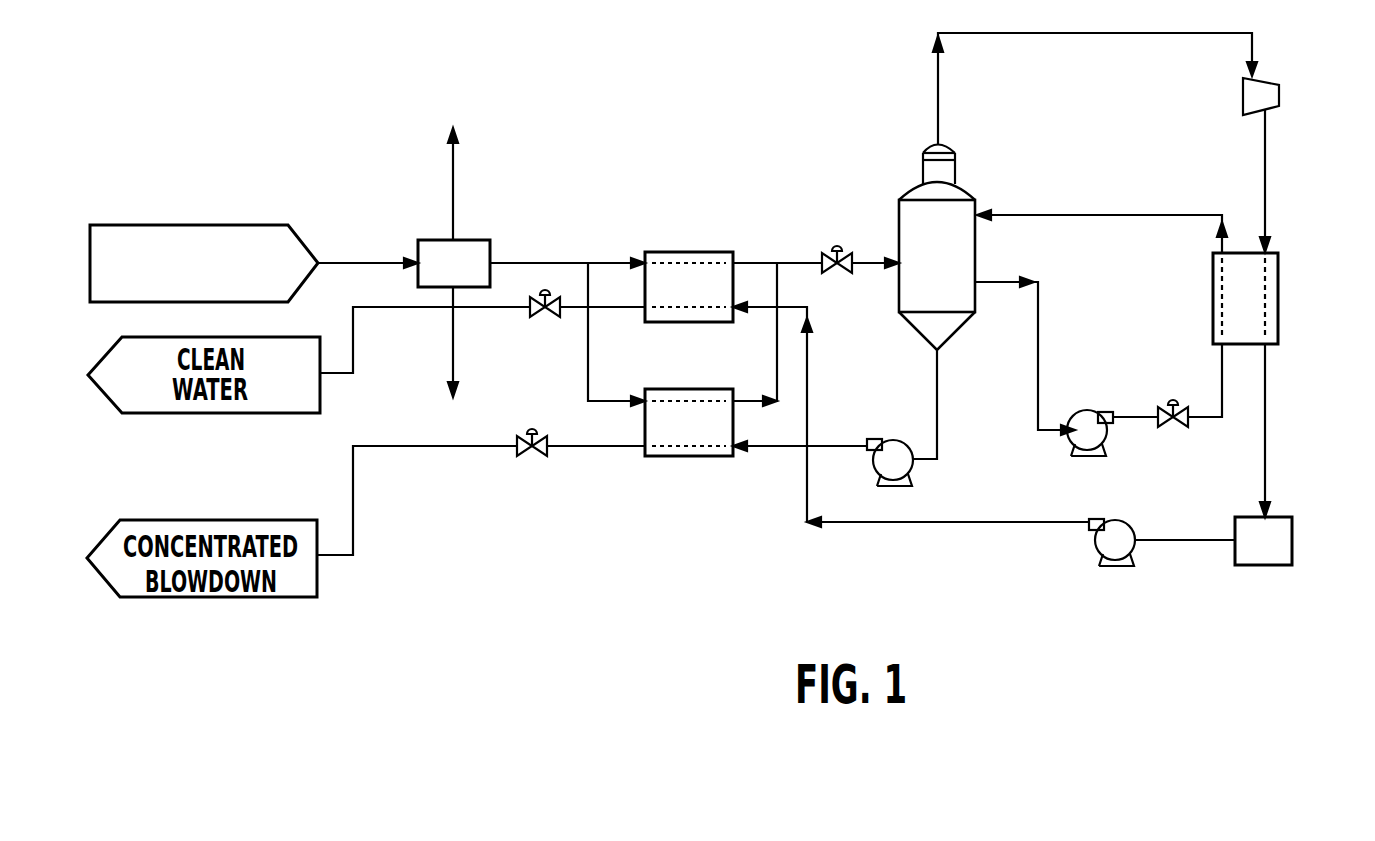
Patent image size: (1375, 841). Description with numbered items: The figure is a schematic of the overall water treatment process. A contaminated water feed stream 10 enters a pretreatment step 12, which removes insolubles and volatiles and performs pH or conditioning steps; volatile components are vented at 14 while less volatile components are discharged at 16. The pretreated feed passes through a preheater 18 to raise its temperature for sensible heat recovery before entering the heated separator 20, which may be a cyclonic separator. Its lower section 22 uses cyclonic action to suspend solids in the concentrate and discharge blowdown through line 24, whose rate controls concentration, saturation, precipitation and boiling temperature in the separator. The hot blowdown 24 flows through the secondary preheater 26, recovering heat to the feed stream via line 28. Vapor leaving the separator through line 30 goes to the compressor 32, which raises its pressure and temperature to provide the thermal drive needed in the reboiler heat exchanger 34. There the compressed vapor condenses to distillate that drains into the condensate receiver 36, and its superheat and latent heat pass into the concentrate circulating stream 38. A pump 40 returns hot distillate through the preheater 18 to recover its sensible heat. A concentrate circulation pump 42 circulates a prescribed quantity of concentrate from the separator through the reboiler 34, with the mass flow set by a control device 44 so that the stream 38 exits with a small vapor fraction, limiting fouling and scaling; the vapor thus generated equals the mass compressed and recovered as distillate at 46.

The contaminated water feed stream 10 is at (257, 225).
The pretreatment step 12 is at (432, 247).
The volatile component vent 14 is at (455, 172).
The less volatile component discharge 16 is at (457, 366).
The preheater 18 is at (695, 258).
The heated separator 20 is at (917, 245).
The lower section of heated separator 22 is at (945, 320).
The blowdown line 24 is at (937, 400).
The secondary preheater 26 is at (690, 452).
The feed stream line 28 is at (840, 448).
The vapor line 30 is at (935, 112).
The compressor 32 is at (1262, 95).
The reboiler heat exchanger 34 is at (1258, 305).
The condensate receiver 36 is at (1270, 540).
The concentrate circulating stream 38 is at (1080, 213).
The distillate pump 40 is at (1115, 545).
The concentrate circulation pump 42 is at (1075, 430).
The control device 44 is at (1172, 400).
The distillate recovery point 46 is at (390, 307).